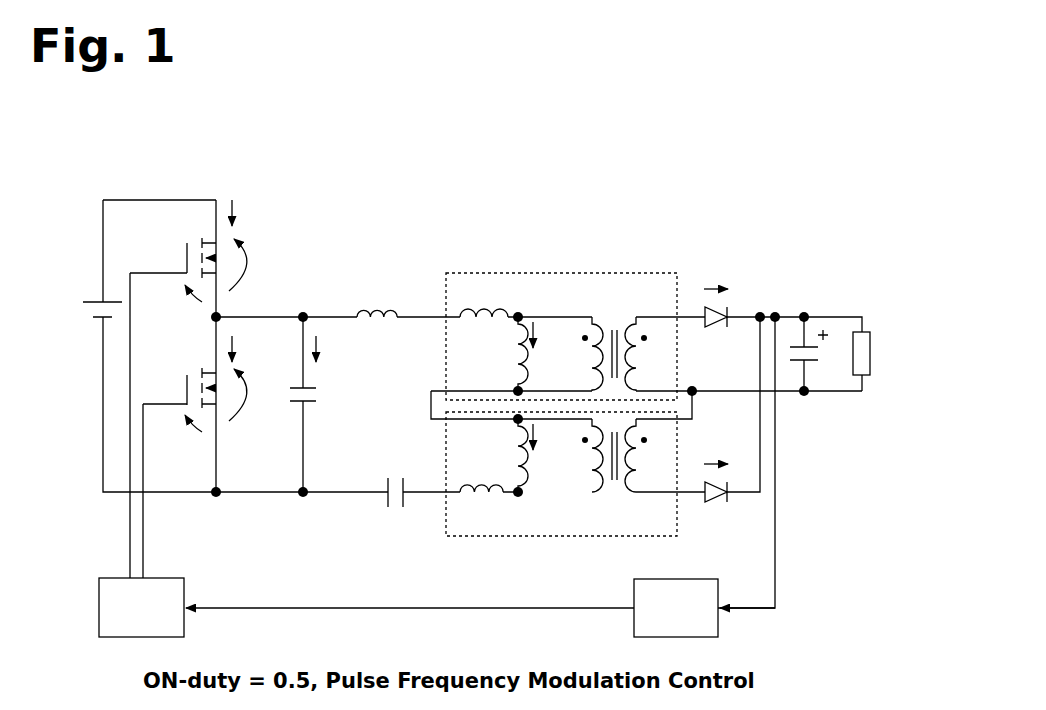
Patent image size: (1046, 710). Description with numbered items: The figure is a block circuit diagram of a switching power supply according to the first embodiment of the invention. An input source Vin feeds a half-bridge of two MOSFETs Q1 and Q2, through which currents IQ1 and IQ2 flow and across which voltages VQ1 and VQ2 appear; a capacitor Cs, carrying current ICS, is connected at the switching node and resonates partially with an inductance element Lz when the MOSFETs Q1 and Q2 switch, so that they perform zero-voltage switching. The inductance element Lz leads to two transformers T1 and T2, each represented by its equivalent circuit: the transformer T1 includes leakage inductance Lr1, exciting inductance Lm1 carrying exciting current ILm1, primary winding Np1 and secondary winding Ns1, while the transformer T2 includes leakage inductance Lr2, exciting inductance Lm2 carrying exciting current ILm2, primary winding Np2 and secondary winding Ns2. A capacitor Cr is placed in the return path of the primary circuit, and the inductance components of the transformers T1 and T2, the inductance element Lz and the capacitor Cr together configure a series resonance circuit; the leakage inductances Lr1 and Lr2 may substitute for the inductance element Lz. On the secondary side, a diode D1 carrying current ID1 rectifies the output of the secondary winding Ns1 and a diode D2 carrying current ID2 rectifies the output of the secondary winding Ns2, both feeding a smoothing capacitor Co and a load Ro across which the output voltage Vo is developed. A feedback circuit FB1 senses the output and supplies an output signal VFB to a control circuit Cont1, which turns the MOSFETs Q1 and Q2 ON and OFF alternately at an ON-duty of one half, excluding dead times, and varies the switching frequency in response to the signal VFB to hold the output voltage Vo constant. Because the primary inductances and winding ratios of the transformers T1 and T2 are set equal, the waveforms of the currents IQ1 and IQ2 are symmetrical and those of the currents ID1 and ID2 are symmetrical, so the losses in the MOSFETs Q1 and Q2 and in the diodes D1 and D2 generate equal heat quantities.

The input DC voltage source Vin is at (84, 314).
The MOSFET Q1 is at (173, 258).
The MOSFET Q2 is at (179, 388).
The current IQ1 is at (252, 213).
The current IQ2 is at (252, 349).
The current through capacitor Cs ICS is at (331, 349).
The voltage across Q1 VQ1 is at (254, 265).
The voltage across Q2 VQ2 is at (254, 395).
The capacitor Cs is at (316, 404).
The inductance element Lz is at (377, 301).
The capacitor Cr is at (393, 508).
The transformer T1 is at (561, 321).
The leakage inductance Lr1 is at (484, 303).
The exciting inductance Lm1 is at (497, 354).
The exciting current ILm1 is at (551, 335).
The primary winding Np1 is at (578, 354).
The secondary winding Ns1 is at (648, 354).
The transformer T2 is at (561, 489).
The leakage inductance Lr2 is at (481, 505).
The exciting inductance Lm2 is at (497, 455).
The exciting current ILm2 is at (551, 437).
The primary winding Np2 is at (578, 455).
The secondary winding Ns2 is at (648, 455).
The diode D1 is at (716, 332).
The current ID1 is at (718, 278).
The diode D2 is at (716, 507).
The current ID2 is at (718, 453).
The smoothing capacitor Co is at (818, 354).
The load resistor Ro is at (879, 353).
The output voltage Vo is at (855, 296).
The feedback circuit FB1 is at (676, 608).
The control circuit Cont1 is at (141, 607).
The output signal VFB is at (410, 596).